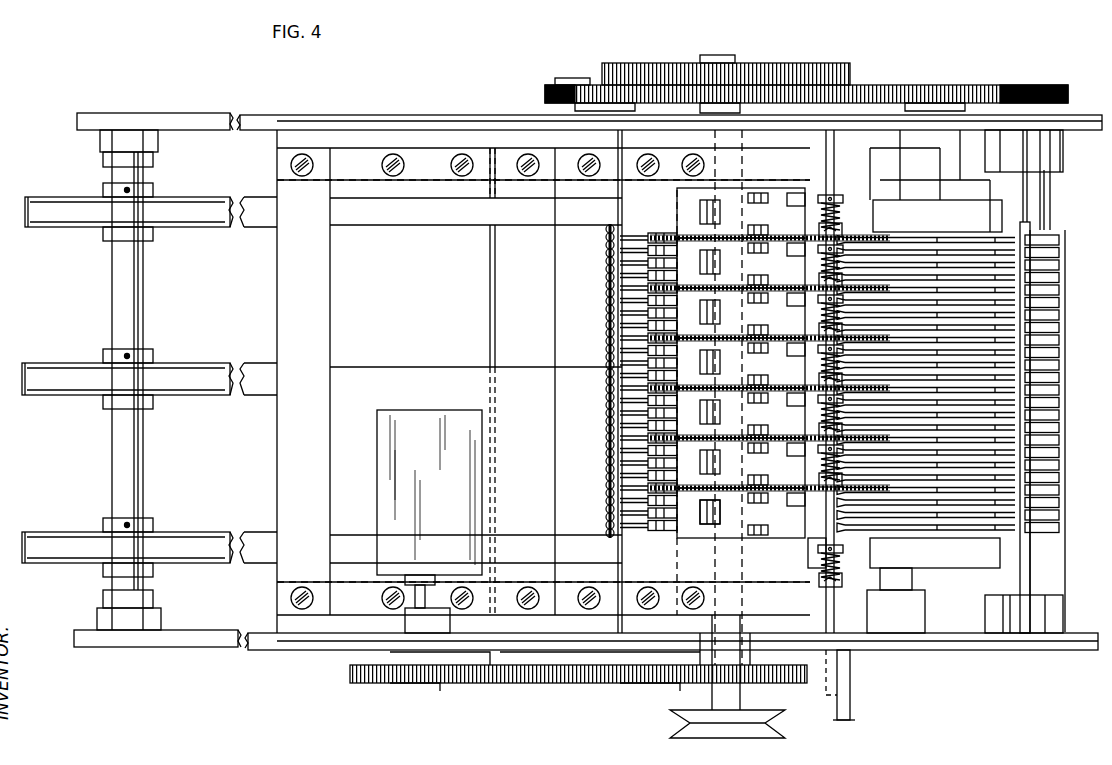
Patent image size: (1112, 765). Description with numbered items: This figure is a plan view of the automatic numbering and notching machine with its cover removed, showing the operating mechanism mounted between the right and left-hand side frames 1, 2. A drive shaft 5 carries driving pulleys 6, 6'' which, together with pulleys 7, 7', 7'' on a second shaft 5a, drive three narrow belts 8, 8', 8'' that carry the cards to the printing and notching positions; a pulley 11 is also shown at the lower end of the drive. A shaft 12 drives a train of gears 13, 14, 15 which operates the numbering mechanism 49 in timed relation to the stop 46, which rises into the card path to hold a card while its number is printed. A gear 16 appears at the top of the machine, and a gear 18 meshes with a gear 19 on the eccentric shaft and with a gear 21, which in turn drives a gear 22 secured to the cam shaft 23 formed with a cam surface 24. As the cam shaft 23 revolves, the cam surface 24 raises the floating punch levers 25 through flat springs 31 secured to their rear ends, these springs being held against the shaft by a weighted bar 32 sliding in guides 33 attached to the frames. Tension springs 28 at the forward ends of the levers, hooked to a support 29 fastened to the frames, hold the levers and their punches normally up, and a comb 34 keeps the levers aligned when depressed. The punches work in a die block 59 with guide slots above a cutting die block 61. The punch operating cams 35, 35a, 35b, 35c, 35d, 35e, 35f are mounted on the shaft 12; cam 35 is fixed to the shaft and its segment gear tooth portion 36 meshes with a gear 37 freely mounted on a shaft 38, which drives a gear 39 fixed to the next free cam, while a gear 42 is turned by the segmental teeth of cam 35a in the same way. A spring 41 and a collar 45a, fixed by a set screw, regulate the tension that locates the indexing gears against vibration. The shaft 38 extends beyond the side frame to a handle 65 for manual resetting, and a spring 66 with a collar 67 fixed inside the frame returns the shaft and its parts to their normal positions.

The side frame 1 is at (268, 647).
The side frame 2 is at (308, 121).
The drive shaft 5 is at (925, 625).
The shaft 5a is at (112, 452).
The driving pulley 6 is at (935, 566).
The driving pulley 6'' is at (936, 181).
The pulley 7 is at (126, 540).
The pulley 7' is at (126, 371).
The pulley 7'' is at (127, 218).
The belt 8 is at (253, 532).
The belt 8' is at (253, 395).
The belt 8'' is at (253, 226).
The pulley 11 is at (765, 738).
The shaft 12 is at (745, 622).
The gear 13 is at (665, 683).
The gear 14 is at (520, 683).
The gear 15 is at (470, 683).
The gear 16 is at (788, 65).
The gear 18 is at (556, 78).
The gear 19 is at (540, 92).
The gear 21 is at (985, 85).
The gear 22 is at (1060, 88).
The cam shaft 23 is at (1040, 195).
The cam surface 24 is at (1048, 538).
The punch lever 25 is at (606, 296).
The tension spring 28 is at (606, 345).
The support 29 is at (618, 210).
The flat spring 31 is at (920, 522).
The weighted bar 32 is at (1035, 222).
The guide 33 is at (1035, 160).
The comb 34 is at (808, 578).
The punch operating cam 35 is at (741, 513).
The punch operating cam 35a is at (741, 463).
The punch operating cam 35b is at (741, 413).
The punch operating cam 35c is at (741, 363).
The punch operating cam 35d is at (741, 313).
The punch operating cam 35e is at (741, 263).
The punch operating cam 35f is at (741, 213).
The segment gear tooth portion 36 is at (734, 500).
The gear 37 is at (875, 490).
The shaft 38 is at (850, 672).
The gear 39 is at (730, 492).
The spring 41 is at (843, 225).
The gear 42 is at (875, 442).
The collar 45a is at (840, 204).
The stop 46 is at (490, 295).
The numbering mechanism 49 is at (384, 448).
The die block 59 is at (560, 300).
The cutting die block 61 is at (543, 381).
The handle 65 is at (850, 718).
The spring 66 is at (843, 578).
The collar 67 is at (843, 552).